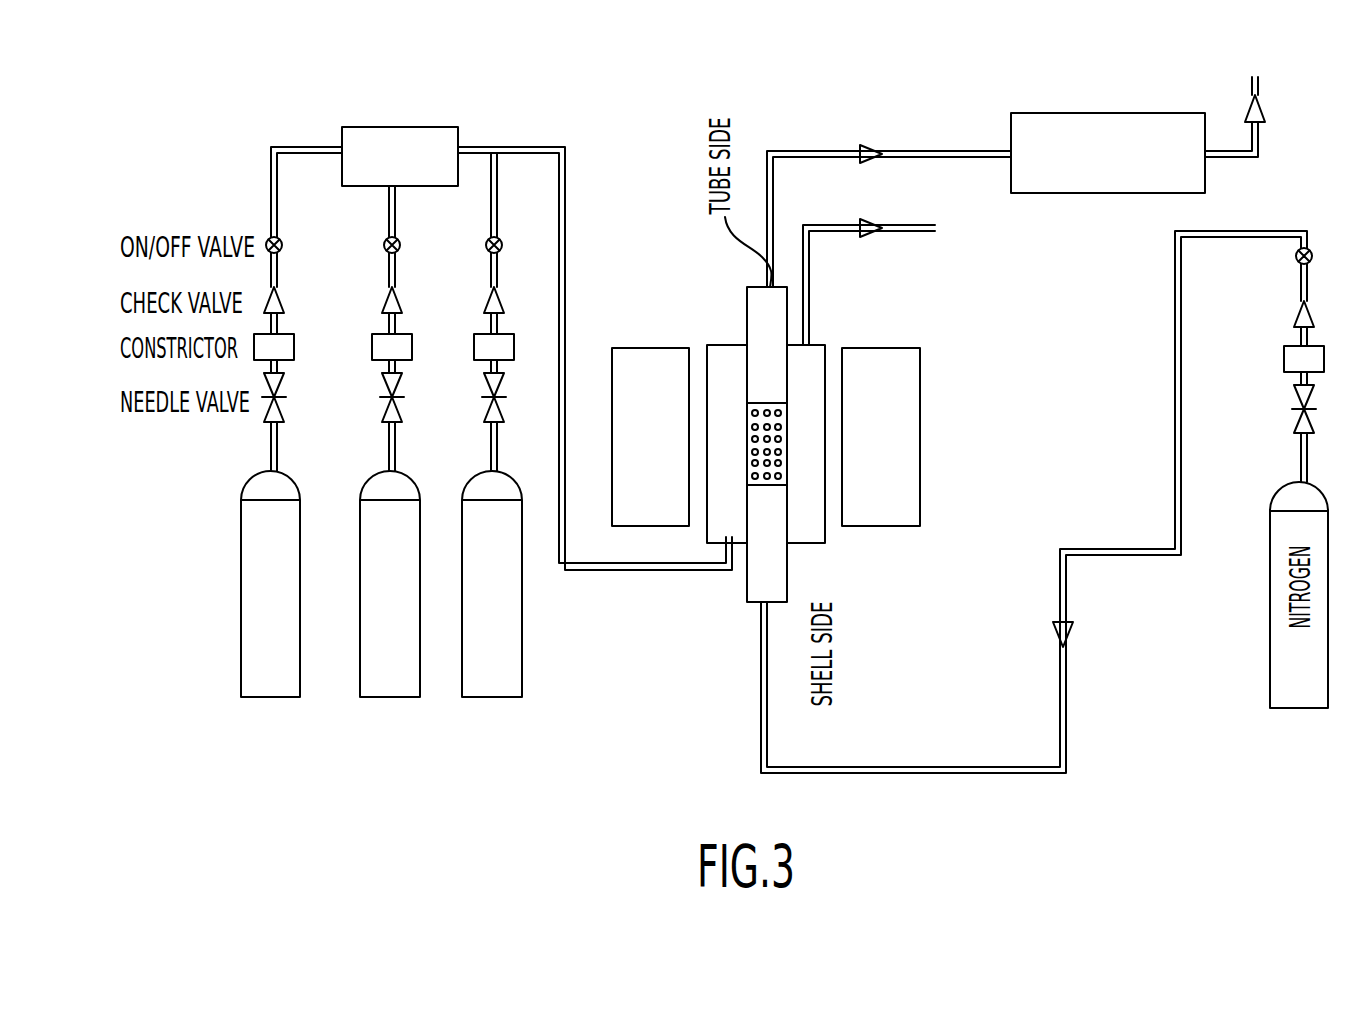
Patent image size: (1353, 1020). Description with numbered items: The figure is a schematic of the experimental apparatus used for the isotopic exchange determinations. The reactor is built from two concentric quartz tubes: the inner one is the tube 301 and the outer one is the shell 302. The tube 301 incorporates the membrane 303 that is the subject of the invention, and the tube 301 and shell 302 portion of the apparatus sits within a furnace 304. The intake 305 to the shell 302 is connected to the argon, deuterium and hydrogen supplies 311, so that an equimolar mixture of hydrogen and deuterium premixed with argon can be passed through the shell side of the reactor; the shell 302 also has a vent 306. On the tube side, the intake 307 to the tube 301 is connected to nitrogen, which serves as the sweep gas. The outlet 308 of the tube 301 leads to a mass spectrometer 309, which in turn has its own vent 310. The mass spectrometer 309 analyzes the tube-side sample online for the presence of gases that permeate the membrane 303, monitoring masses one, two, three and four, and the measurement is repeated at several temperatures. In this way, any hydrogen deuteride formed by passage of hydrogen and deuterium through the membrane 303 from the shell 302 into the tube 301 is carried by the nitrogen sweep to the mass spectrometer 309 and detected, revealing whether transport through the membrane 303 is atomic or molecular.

The tube 301 is at (778, 308).
The shell 302 is at (825, 543).
The membrane 303 is at (762, 430).
The furnace 304 is at (920, 387).
The intake 305 is at (630, 570).
The vent 306 is at (912, 225).
The intake 307 is at (1175, 355).
The outlet 308 is at (908, 152).
The mass spectrometer 309 is at (1045, 113).
The vent 310 is at (1262, 78).
The Ar, D2, and H2 supplies 311 is at (265, 697).